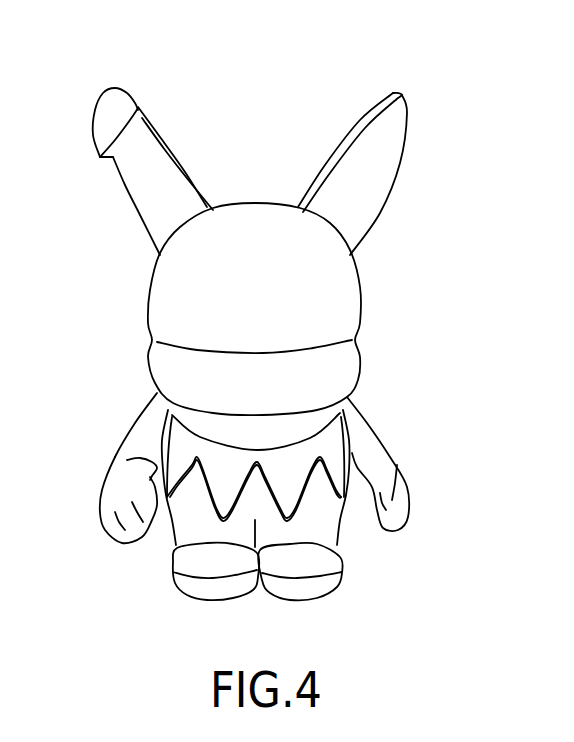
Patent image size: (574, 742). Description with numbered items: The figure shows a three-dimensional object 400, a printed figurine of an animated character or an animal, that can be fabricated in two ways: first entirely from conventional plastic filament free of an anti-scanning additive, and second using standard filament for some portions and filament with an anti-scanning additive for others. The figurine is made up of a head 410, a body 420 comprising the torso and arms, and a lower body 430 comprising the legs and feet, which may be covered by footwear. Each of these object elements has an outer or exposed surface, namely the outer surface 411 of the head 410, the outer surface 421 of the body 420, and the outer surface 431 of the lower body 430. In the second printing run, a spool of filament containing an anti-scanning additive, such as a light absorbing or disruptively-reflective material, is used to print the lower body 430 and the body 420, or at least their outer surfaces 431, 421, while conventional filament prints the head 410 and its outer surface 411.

The 3D object 400 is at (450, 70).
The head 410 is at (388, 290).
The outer surface 411 is at (147, 287).
The body 420 is at (413, 437).
The outer surface 421 is at (118, 448).
The lower body 430 is at (367, 550).
The outer surface 431 is at (343, 593).